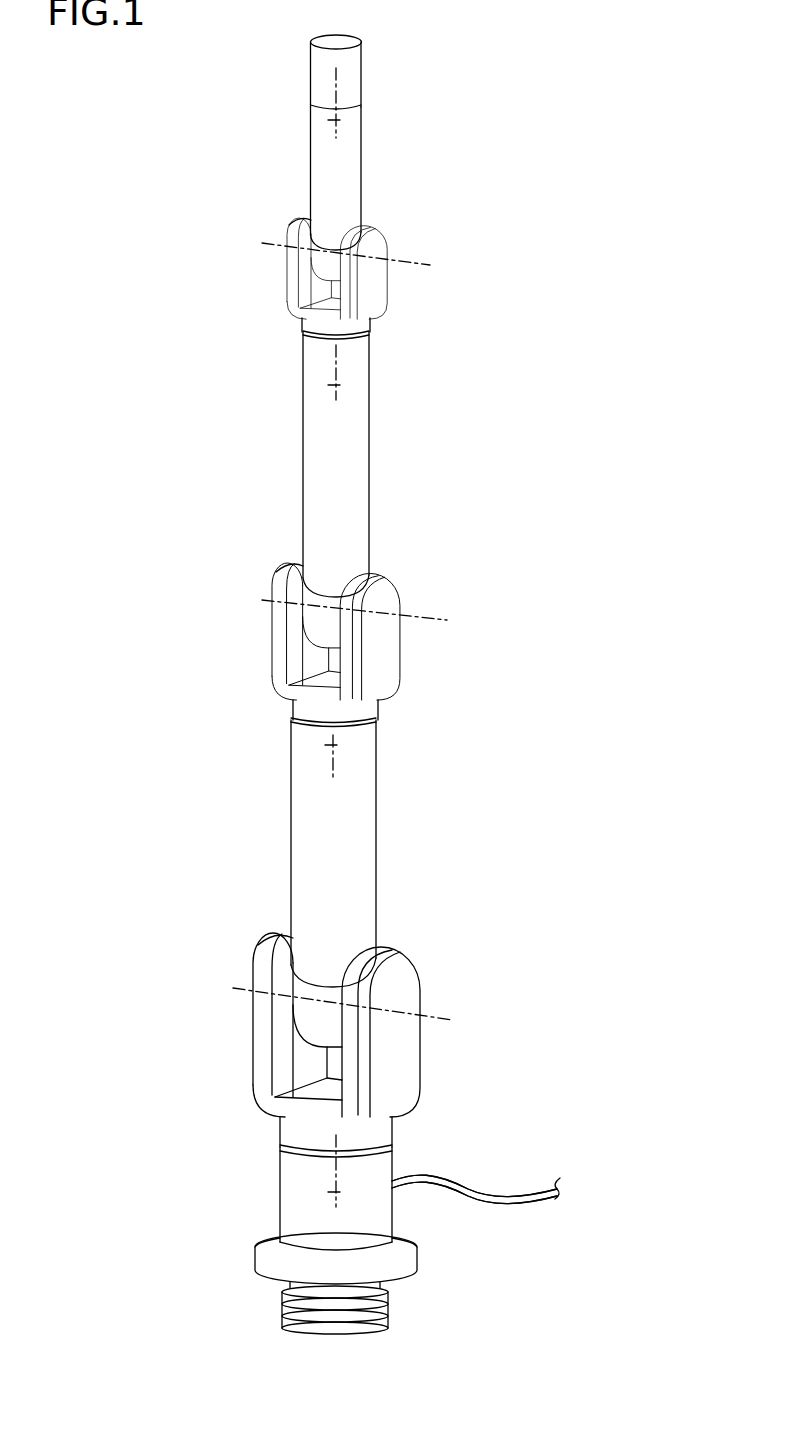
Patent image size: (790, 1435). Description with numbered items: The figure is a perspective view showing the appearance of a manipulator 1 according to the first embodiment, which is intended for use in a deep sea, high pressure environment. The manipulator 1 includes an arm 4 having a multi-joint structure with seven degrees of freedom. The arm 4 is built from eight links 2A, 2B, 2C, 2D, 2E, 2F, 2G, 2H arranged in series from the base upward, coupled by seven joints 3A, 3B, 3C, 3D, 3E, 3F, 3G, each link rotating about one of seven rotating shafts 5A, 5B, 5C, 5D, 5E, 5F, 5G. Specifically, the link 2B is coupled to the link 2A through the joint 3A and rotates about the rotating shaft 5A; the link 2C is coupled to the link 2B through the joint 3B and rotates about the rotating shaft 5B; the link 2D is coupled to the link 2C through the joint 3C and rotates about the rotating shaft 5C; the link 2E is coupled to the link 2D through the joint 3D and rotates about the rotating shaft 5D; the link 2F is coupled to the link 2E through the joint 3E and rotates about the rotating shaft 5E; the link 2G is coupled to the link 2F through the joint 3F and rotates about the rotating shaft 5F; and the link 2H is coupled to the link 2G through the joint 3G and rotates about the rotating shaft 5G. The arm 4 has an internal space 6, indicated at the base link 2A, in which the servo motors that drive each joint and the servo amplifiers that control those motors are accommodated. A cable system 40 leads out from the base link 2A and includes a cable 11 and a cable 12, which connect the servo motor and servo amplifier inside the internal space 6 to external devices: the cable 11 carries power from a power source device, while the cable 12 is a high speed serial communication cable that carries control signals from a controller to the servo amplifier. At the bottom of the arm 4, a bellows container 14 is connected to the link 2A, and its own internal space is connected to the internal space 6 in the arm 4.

The manipulator 1 is at (560, 195).
The arm 4 is at (540, 393).
The link 2A is at (380, 1168).
The link 2B is at (405, 1062).
The link 2C is at (340, 885).
The link 2D is at (395, 655).
The link 2E is at (343, 485).
The link 2F is at (373, 295).
The link 2G is at (350, 175).
The link 2H is at (355, 78).
The joint 3A is at (280, 1138).
The joint 3B is at (278, 953).
The joint 3C is at (292, 720).
The joint 3D is at (290, 565).
The joint 3E is at (300, 335).
The joint 3F is at (297, 218).
The joint 3G is at (307, 103).
The rotating shaft 5A is at (348, 1192).
The rotating shaft 5B is at (430, 1000).
The rotating shaft 5C is at (340, 745).
The rotating shaft 5D is at (410, 605).
The rotating shaft 5E is at (343, 385).
The rotating shaft 5F is at (390, 260).
The rotating shaft 5G is at (345, 120).
The internal space 6 is at (310, 1200).
The cable system 40 is at (497, 1205).
The cable 11 is at (537, 1200).
The cable 12 is at (537, 1200).
The bellows container 14 is at (388, 1312).